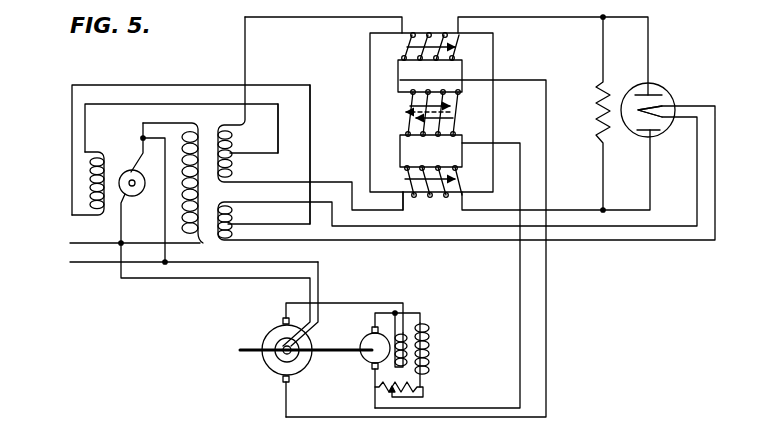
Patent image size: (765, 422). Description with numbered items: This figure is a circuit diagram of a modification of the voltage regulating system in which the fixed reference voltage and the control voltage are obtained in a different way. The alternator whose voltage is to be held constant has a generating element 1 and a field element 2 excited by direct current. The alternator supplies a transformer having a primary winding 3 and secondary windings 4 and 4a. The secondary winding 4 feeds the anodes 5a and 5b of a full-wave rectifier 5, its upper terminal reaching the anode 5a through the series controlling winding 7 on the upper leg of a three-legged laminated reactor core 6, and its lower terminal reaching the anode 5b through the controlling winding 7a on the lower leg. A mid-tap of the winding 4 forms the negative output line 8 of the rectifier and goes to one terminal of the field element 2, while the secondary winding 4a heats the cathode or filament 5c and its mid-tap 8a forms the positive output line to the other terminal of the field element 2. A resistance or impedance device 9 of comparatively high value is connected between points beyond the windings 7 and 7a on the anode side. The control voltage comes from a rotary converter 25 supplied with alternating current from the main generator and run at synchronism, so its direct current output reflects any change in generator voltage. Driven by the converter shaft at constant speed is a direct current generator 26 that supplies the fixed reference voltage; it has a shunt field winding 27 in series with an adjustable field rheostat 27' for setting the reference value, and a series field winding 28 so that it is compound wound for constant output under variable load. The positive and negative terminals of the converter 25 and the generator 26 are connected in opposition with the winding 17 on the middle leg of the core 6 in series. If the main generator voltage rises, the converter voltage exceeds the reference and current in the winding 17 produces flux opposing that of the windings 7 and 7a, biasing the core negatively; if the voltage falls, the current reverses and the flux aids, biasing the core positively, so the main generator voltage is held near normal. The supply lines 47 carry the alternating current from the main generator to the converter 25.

The generating element 1 is at (141, 177).
The field element 2 is at (106, 168).
The primary winding 3 is at (175, 191).
The secondary winding 4 is at (229, 135).
The secondary winding 4a is at (231, 210).
The rectifier 5 is at (648, 115).
The anode 5a is at (656, 91).
The anode 5b is at (656, 134).
The cathode 5c is at (637, 132).
The laminated core 6 is at (370, 64).
The controlling winding 7 is at (416, 33).
The controlling winding 7a is at (422, 198).
The negative output line 8 is at (278, 133).
The mid-tap 8a is at (310, 131).
The resistance or impedance device 9 is at (597, 108).
The winding 17 is at (406, 100).
The rotary converter 25 is at (263, 336).
The direct current generator 26 is at (364, 362).
The shunt field winding 27 is at (436, 355).
The adjustable field rheostat 27' is at (382, 396).
The series field winding 28 is at (417, 326).
The supply lines 47 is at (100, 239).